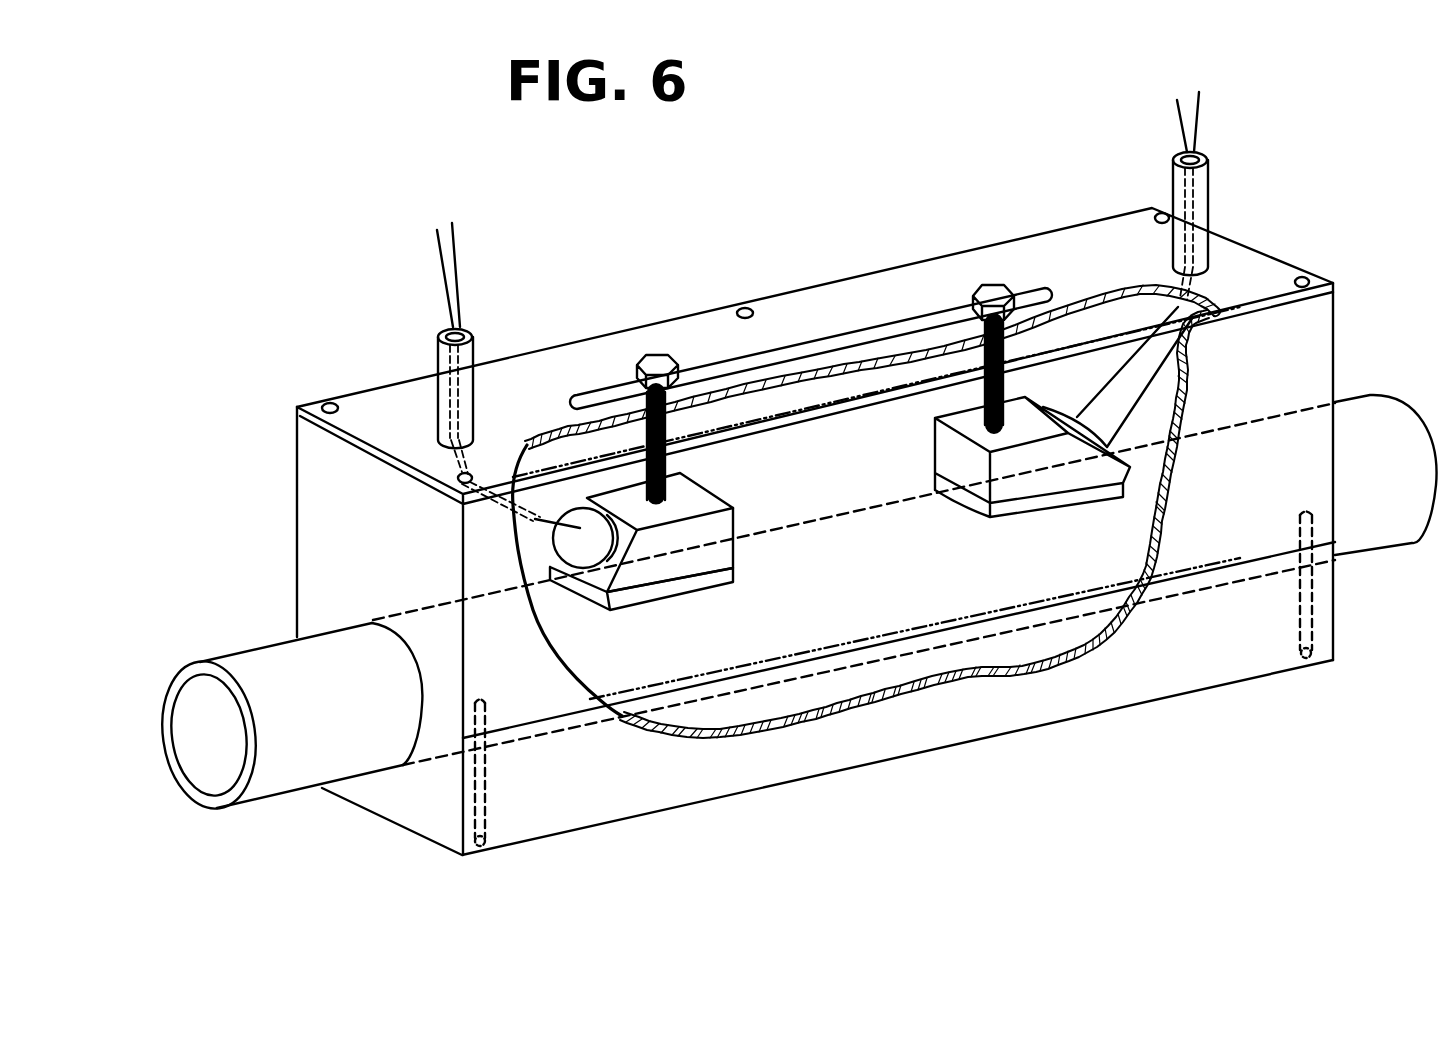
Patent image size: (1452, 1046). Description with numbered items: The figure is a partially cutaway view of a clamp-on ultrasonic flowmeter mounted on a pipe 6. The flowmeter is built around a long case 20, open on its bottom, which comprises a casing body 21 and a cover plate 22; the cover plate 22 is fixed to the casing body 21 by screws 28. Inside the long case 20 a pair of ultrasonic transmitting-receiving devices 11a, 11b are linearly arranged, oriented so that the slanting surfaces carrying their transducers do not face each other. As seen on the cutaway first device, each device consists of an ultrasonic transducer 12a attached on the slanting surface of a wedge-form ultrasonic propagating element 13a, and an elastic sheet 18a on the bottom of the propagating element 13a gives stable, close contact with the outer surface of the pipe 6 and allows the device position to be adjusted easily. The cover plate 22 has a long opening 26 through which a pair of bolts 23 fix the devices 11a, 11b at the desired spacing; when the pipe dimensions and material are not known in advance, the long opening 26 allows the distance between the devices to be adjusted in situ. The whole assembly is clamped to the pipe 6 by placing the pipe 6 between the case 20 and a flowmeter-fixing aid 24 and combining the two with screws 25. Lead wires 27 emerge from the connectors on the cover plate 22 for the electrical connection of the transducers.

The pipe 6 is at (283, 785).
The ultrasonic transmitting-receiving device 11a is at (598, 476).
The ultrasonic transmitting-receiving device 11b is at (951, 400).
The ultrasonic transducer 12a is at (580, 555).
The ultrasonic propagating element 13a is at (705, 555).
The elastic sheet 18a is at (677, 587).
The long case 20 is at (266, 406).
The casing body 21 is at (300, 522).
The cover plate 22 is at (388, 395).
The bolt 23 is at (655, 353).
The flowmeter-fixing aid 24 is at (403, 808).
The screw 25 is at (480, 846).
The opening 26 is at (820, 345).
The lead wire 27 is at (457, 247).
The screw 28 is at (1300, 277).